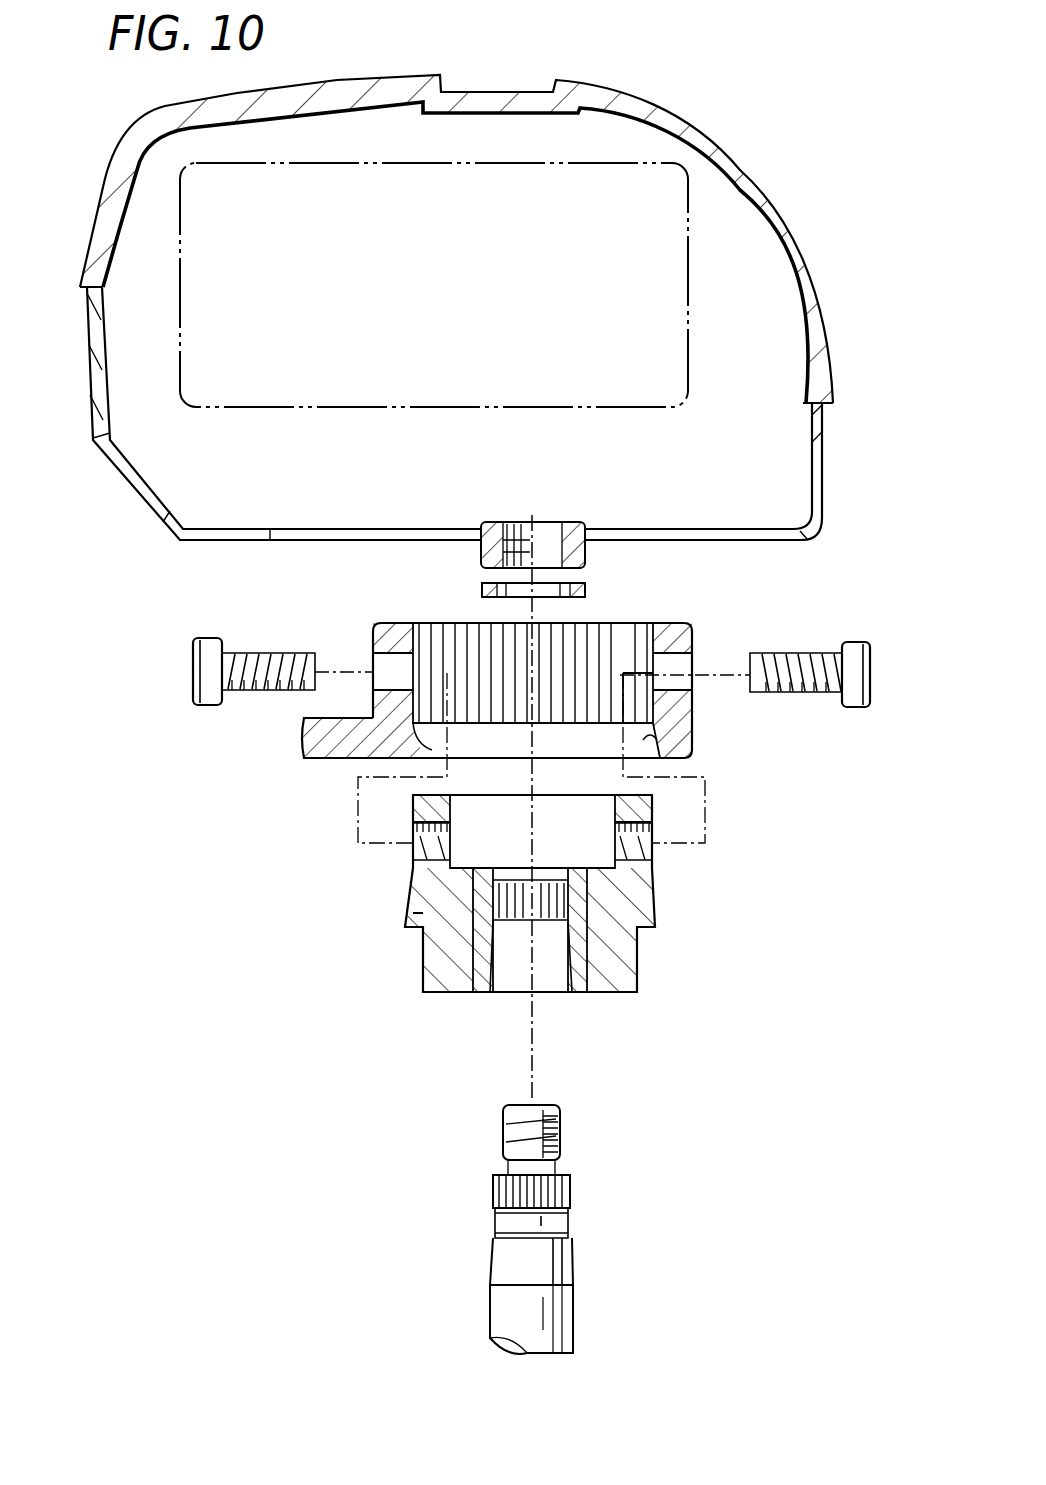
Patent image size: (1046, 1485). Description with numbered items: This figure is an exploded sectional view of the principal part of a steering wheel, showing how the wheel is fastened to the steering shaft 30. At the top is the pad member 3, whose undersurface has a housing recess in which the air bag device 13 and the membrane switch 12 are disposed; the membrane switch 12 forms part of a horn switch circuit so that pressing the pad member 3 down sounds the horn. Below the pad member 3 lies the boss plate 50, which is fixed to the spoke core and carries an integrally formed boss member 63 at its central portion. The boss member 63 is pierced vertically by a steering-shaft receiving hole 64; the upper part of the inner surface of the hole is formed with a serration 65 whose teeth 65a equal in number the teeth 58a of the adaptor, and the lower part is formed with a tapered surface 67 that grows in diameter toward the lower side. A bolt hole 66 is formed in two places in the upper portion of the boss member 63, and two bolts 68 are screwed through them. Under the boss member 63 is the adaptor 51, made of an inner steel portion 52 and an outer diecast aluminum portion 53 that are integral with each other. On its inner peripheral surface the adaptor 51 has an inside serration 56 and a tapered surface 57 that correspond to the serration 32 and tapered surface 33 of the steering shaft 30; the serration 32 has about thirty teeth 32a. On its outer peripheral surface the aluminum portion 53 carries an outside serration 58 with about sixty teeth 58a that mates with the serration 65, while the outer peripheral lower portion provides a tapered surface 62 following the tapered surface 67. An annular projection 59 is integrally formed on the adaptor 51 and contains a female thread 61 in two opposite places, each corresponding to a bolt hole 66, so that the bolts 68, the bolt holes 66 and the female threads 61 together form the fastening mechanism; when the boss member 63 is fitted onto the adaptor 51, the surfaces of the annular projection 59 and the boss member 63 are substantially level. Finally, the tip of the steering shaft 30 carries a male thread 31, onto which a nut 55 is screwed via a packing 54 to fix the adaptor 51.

The pad member 3 is at (723, 148).
The membrane switch 12 is at (434, 262).
The air bag device 13 is at (292, 162).
The steering shaft 30 is at (523, 1229).
The male thread 31 is at (562, 1128).
The serration 32 is at (515, 1193).
The teeth 32a is at (513, 1190).
The tapered surface 33 is at (573, 1248).
The boss plate 50 is at (297, 740).
The adaptor 51 is at (596, 942).
The steel portion 52 is at (487, 982).
The aluminum portion 53 is at (450, 982).
The packing 54 is at (585, 591).
The nut 55 is at (585, 557).
The serration (inside serration) 56 is at (538, 893).
The tapered surface 57 is at (563, 982).
The serration (outside serration) 58 is at (628, 831).
The teeth 58a is at (653, 817).
The annular projection 59 is at (640, 793).
The female thread 61 is at (420, 850).
The tapered surface 62 is at (570, 929).
The boss member 63 is at (493, 681).
The steering-shaft receiving hole 64 is at (415, 733).
The serration 65 is at (497, 635).
The teeth 65a is at (447, 622).
The bolt hole 66 is at (373, 661).
The tapered surface 67 is at (645, 741).
The bolts 68 is at (257, 653).